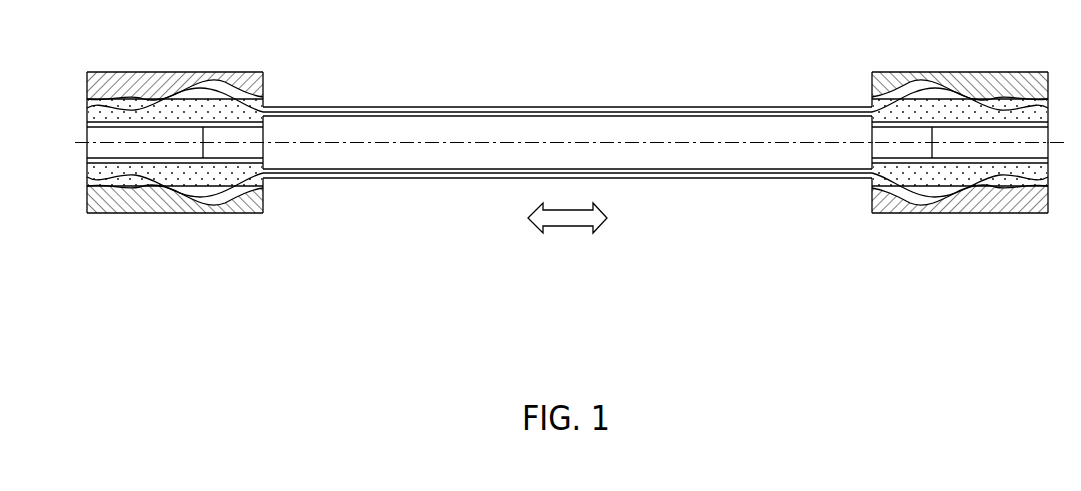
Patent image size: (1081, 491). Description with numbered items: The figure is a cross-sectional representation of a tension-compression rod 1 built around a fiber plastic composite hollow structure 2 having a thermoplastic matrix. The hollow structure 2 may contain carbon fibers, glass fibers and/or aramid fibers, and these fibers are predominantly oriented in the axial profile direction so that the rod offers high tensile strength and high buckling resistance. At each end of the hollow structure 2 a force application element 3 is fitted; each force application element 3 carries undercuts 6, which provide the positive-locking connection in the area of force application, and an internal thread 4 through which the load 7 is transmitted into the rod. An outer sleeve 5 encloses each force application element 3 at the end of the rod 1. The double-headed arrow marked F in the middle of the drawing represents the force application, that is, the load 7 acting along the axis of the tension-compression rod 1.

The tension-compression rod 1 is at (571, 147).
The fiber plastic composite hollow structure 2 is at (300, 110).
The force application element 3 is at (227, 168).
The internal thread 4 is at (167, 122).
The outer sleeve 5 is at (240, 203).
The undercut 6 is at (145, 178).
The load 7 is at (610, 235).